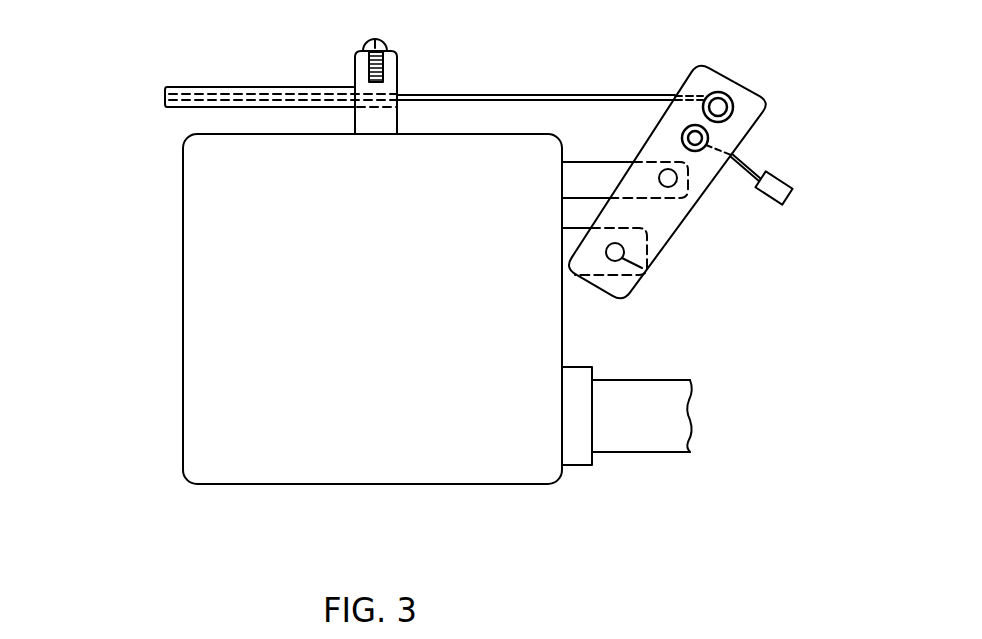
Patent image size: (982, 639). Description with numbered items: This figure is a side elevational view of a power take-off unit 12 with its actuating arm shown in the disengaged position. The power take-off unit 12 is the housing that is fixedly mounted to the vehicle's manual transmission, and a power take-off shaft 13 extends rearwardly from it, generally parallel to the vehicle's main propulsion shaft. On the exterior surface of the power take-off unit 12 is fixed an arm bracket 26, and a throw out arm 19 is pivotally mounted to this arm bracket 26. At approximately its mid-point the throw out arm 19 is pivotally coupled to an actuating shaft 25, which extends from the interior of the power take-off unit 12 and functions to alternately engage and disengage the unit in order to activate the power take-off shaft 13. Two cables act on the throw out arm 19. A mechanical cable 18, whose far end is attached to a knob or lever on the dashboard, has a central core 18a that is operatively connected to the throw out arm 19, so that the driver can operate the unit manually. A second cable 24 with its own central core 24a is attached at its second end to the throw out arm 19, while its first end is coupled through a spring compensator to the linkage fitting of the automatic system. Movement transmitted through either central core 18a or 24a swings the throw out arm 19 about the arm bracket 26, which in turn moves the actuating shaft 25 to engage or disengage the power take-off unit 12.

The power take-off unit 12 is at (124, 242).
The power take-off shaft 13 is at (628, 435).
The mechanical cable 18 is at (233, 97).
The central core 18a is at (562, 95).
The throw out arm 19 is at (662, 230).
The cable 24 is at (770, 186).
The central core 24a is at (735, 157).
The actuating shaft 25 is at (575, 173).
The arm bracket 26 is at (645, 269).